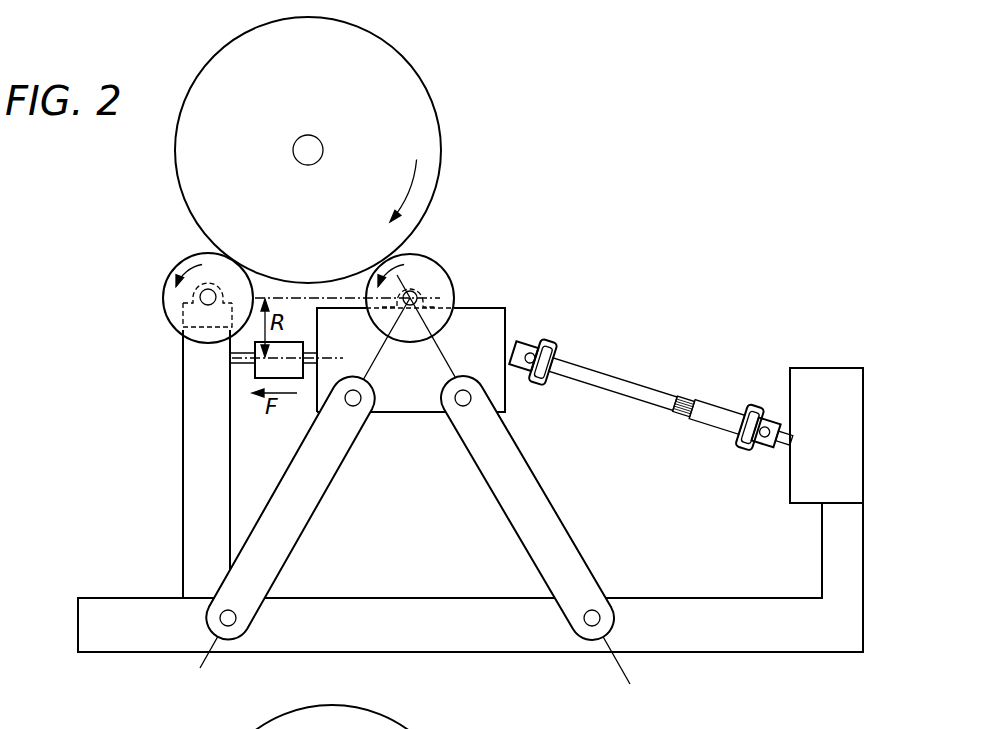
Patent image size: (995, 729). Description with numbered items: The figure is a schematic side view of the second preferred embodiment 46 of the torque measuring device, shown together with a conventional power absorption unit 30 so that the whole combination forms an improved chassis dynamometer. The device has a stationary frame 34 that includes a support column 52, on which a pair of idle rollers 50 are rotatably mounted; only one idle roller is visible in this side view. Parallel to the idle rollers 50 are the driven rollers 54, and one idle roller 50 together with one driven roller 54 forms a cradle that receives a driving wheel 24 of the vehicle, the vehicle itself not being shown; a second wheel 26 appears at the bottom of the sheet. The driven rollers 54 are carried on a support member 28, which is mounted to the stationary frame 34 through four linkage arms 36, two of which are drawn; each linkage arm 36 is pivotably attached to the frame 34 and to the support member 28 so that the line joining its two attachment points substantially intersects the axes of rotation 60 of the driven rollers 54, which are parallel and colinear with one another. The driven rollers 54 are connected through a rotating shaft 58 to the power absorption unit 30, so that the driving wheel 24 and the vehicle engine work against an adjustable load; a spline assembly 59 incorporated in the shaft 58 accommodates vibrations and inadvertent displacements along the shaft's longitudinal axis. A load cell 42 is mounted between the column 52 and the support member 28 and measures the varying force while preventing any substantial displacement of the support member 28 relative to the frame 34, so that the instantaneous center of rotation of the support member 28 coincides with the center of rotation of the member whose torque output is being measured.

The driving wheel 24 is at (407, 62).
The second wheel 26 is at (344, 717).
The support member 28 is at (493, 320).
The power absorption unit 30 is at (856, 368).
The stationary frame 34 is at (731, 643).
The linkage arms 36 is at (307, 509).
The load cell 42 is at (256, 372).
The second preferred embodiment 46 is at (470, 507).
The idle rollers 50 is at (196, 256).
The support column 52 is at (183, 420).
The driven rollers 54 is at (480, 255).
The rotating shaft 58 is at (620, 385).
The spline assembly 59 is at (688, 400).
The axes of rotation 60 is at (410, 298).